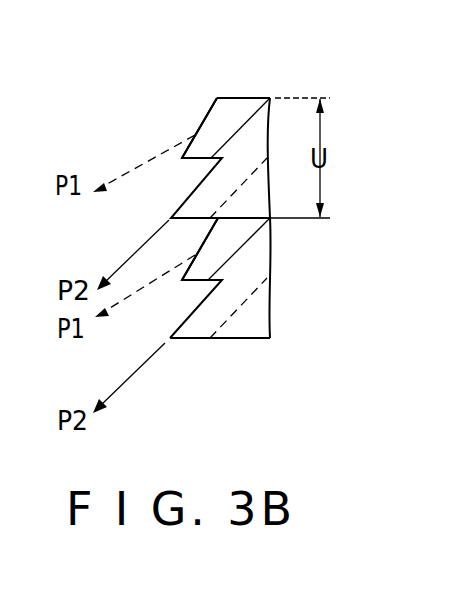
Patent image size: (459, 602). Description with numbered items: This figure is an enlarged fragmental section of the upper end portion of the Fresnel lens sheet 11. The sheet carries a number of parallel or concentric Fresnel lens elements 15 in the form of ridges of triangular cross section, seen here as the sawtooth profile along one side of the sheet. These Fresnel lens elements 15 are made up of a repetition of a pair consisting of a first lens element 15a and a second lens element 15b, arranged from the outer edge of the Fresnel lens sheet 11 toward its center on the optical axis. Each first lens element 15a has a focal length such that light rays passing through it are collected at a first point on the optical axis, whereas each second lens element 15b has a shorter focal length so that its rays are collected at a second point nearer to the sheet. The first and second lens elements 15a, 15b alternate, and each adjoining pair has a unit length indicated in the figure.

The Fresnel lens sheet 11 is at (234, 110).
The Fresnel lens elements 15 is at (140, 226).
The first lens element 15a is at (198, 133).
The second lens element 15b is at (188, 216).